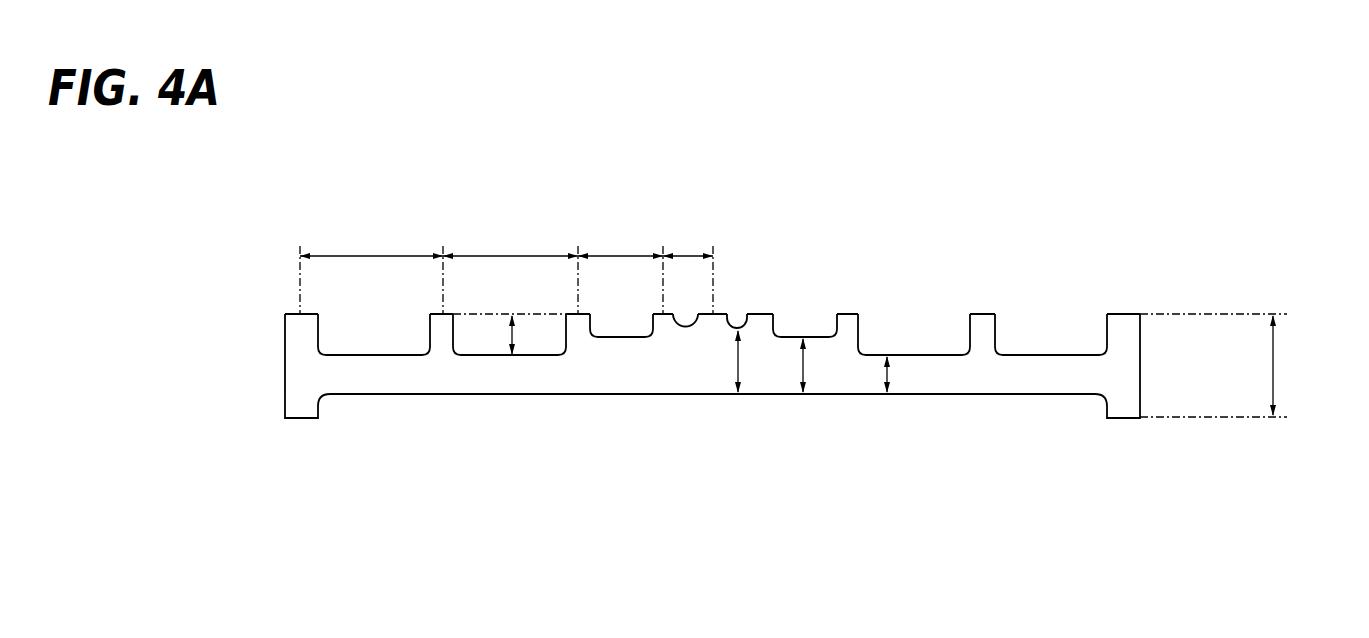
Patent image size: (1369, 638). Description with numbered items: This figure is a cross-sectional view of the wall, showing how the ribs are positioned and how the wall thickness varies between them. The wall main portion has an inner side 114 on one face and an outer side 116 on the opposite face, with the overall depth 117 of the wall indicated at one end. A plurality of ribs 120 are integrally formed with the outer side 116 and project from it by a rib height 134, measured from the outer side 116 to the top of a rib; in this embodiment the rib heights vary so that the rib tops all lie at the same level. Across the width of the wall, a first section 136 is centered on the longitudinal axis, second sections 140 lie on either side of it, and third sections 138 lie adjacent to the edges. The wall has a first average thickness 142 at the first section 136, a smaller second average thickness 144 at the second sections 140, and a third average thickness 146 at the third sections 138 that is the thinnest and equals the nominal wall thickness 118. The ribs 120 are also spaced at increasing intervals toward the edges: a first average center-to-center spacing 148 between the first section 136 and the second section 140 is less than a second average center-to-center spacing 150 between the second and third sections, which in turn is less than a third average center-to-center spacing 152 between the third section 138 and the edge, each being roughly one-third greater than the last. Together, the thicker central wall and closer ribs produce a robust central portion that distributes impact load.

The inner side 114 is at (948, 395).
The outer side 116 is at (360, 353).
The depth 117 is at (1273, 370).
The nominal wall thickness 118 is at (895, 458).
The ribs 120 is at (768, 313).
The rib height 134 is at (502, 337).
The first section 136 is at (738, 325).
The third sections 138 is at (937, 353).
The second sections 140 is at (817, 333).
The first average thickness 142 is at (740, 363).
The second average thickness 144 is at (805, 363).
The third average thickness 146 is at (889, 373).
The first average center-to-center spacing 148 is at (687, 256).
The second average center-to-center spacing 150 is at (620, 256).
The third average center-to-center spacing 152 is at (370, 256).